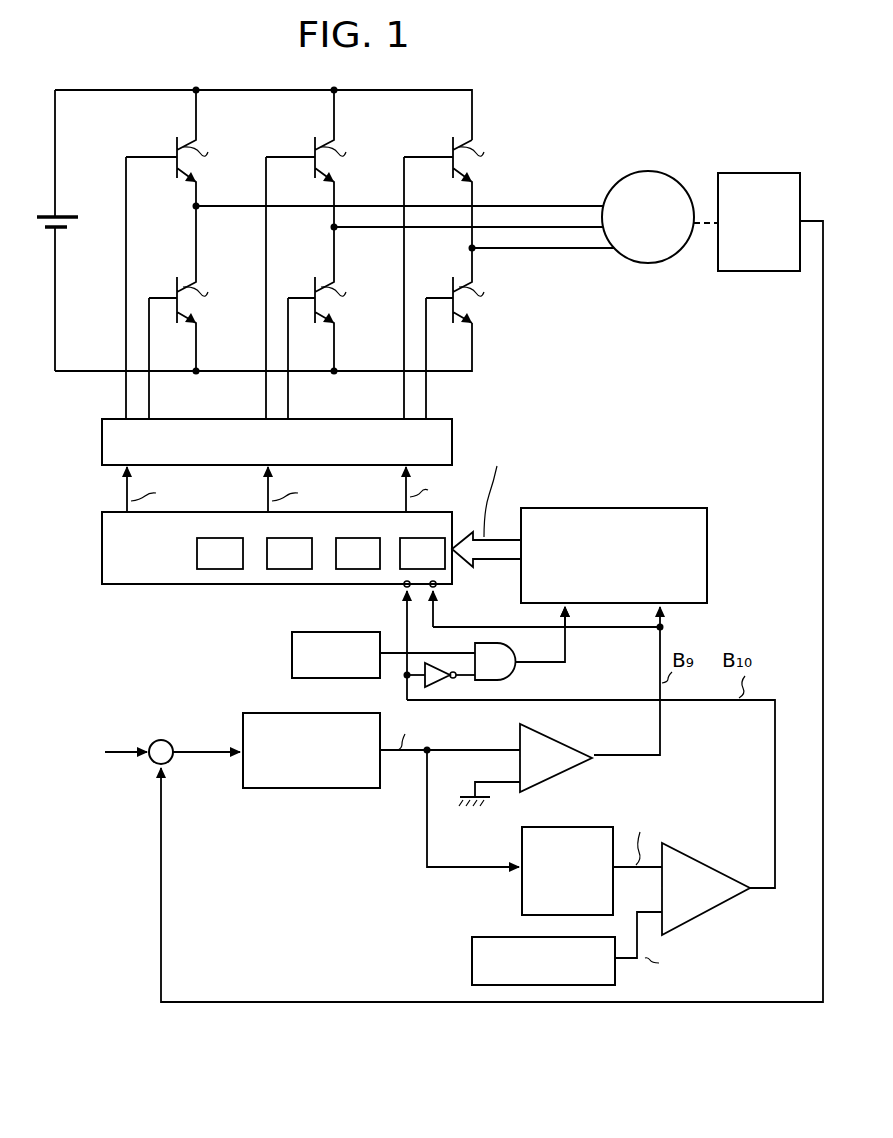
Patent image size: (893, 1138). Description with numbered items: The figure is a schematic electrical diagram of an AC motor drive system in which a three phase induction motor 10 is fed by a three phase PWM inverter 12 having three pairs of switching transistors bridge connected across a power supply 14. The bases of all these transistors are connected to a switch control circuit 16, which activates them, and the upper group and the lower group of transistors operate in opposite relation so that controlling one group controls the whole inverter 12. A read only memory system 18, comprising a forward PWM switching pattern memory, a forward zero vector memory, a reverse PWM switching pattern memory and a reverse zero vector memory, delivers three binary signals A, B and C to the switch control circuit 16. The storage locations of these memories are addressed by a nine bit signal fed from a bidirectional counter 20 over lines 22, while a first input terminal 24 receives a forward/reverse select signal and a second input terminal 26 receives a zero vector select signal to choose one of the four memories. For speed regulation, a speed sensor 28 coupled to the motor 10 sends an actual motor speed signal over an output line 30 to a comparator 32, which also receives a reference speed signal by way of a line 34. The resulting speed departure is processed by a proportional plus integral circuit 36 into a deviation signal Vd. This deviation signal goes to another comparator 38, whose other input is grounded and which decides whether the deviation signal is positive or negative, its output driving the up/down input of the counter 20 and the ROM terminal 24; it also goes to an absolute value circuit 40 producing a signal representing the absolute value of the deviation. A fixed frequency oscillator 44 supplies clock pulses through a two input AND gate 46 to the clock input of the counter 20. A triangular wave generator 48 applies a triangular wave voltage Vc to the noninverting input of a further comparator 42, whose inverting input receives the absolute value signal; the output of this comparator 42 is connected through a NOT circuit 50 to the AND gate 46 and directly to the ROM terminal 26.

The induction motor 10 is at (647, 171).
The PWM inverter 12 is at (505, 108).
The power supply 14 is at (71, 216).
The switch control circuit 16 is at (452, 442).
The memory or storage system (ROM system) 18 is at (102, 512).
The bidirectional counter 20 is at (605, 508).
The lines 22 is at (505, 537).
The first input terminal 24 is at (436, 589).
The second input terminal 26 is at (403, 590).
The speed sensor 28 is at (761, 172).
The output line 30 is at (163, 830).
The comparator 32 is at (171, 760).
The line 34 is at (118, 756).
The proportional plus integral (PPI) circuit 36 is at (309, 788).
The comparator 38 is at (545, 741).
The absolute value circuit 40 is at (521, 838).
The comparator 42 is at (727, 903).
The fixed frequency oscillator 44 is at (318, 632).
The two input AND gate 46 is at (520, 672).
The triangular wave generator 48 is at (472, 960).
The NOT circuit 50 is at (439, 688).